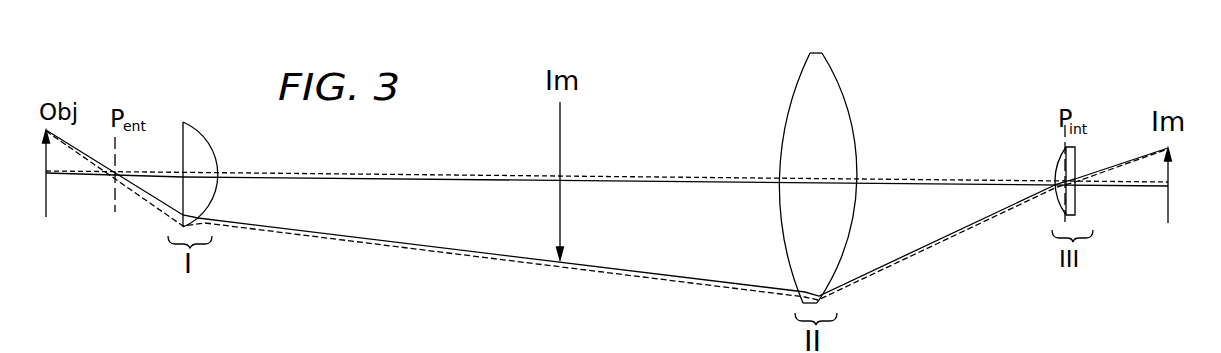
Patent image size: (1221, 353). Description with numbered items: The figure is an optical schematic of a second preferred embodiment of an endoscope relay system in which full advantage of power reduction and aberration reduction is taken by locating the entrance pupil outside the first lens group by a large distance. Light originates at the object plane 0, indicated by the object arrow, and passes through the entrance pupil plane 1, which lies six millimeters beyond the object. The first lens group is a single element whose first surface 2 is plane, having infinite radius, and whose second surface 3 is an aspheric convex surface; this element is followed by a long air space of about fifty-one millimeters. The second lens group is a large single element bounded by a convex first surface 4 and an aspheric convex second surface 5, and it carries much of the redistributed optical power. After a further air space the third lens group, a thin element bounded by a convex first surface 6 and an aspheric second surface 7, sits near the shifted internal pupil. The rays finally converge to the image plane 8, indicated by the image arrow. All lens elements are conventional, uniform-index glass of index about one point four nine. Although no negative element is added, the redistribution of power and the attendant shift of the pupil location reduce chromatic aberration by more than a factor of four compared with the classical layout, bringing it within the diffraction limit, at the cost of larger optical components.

The object plane 0 is at (51, 173).
The entrance pupil plane 1 is at (121, 182).
The first surface of first lens group 2 is at (173, 174).
The second surface of first lens group 3 is at (203, 174).
The first surface of second lens group 4 is at (788, 178).
The second surface of second lens group 5 is at (843, 178).
The first surface of third lens group 6 is at (1054, 179).
The second surface of third lens group 7 is at (1079, 179).
The image plane 8 is at (1175, 185).